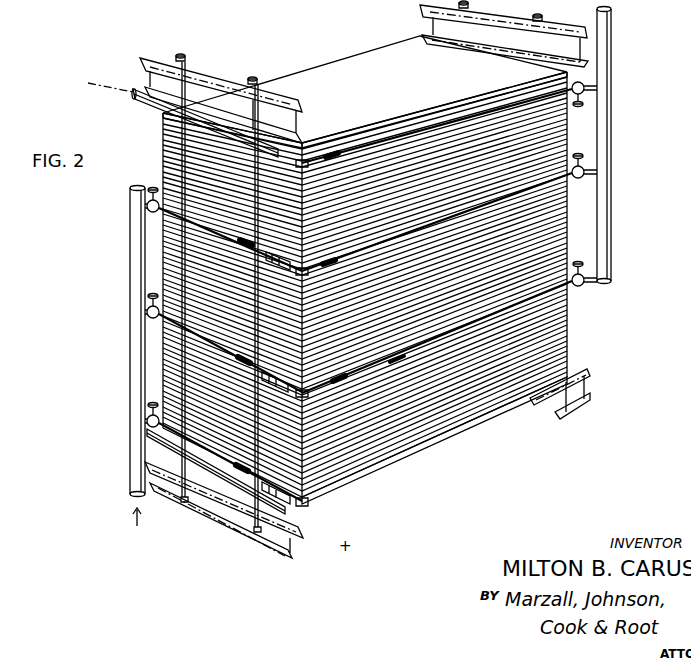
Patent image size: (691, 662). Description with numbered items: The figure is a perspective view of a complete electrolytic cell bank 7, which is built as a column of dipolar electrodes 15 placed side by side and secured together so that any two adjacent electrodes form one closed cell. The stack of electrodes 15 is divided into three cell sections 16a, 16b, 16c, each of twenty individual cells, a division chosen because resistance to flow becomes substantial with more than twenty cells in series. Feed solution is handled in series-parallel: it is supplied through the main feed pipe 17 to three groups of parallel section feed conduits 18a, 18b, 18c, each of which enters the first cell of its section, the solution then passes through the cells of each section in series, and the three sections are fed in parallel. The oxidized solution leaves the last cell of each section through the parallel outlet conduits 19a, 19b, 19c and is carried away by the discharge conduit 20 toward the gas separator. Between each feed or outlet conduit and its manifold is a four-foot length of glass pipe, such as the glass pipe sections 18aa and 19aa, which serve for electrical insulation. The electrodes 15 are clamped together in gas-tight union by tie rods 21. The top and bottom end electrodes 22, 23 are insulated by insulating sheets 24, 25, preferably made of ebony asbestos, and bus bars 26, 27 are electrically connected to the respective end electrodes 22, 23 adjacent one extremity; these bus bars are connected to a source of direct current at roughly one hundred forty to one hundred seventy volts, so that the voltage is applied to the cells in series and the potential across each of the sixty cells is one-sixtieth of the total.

The electrolytic cell bank 7 is at (283, 70).
The dipolar electrodes 15 is at (575, 331).
The cell section 16a is at (575, 307).
The cell section 16b is at (575, 212).
The cell section 16c is at (573, 117).
The main feed pipe 17 is at (131, 352).
The section feed conduit 18a is at (250, 480).
The glass pipe section 18aa is at (195, 466).
The section feed conduit 18b is at (250, 355).
The section feed conduit 18c is at (258, 244).
The outlet conduit 19a is at (306, 385).
The glass pipe section 19aa is at (395, 364).
The outlet conduit 19b is at (304, 259).
The outlet conduit 19c is at (304, 158).
The discharge conduit 20 is at (612, 236).
The tie rods 21 is at (298, 82).
The top end electrode 22 is at (578, 72).
The bottom end electrode 23 is at (587, 370).
The insulating sheet 24 is at (352, 114).
The insulating sheet 25 is at (373, 470).
The bus bar 26 is at (135, 100).
The bus bar 27 is at (283, 532).